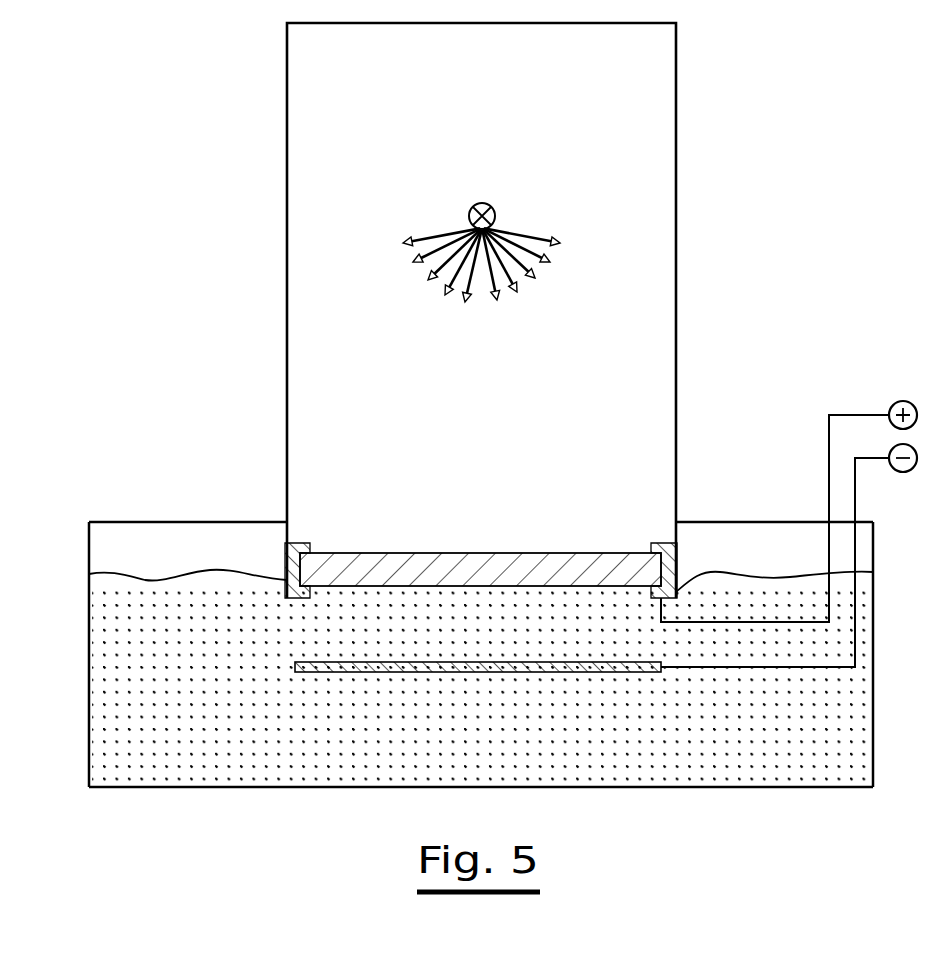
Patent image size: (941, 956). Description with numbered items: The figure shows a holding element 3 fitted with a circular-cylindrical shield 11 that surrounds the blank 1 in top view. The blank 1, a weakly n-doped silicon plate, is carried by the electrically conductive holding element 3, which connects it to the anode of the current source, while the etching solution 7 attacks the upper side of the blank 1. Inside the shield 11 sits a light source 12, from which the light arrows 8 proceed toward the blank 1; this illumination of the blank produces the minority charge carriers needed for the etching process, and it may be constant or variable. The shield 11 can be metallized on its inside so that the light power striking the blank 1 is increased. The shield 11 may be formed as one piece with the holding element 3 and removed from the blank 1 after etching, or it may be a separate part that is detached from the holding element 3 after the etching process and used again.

The blank 1 is at (363, 590).
The holding element 3 is at (292, 598).
The etching solution 7 is at (121, 577).
The light arrows 8 is at (413, 236).
The circular-cylindrical shield 11 is at (677, 172).
The light source 12 is at (482, 204).